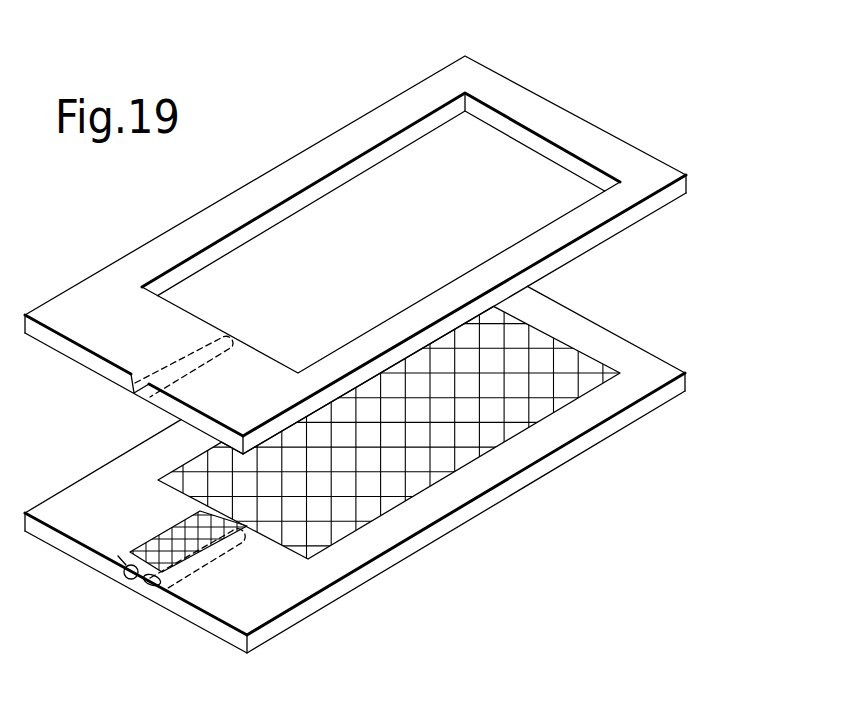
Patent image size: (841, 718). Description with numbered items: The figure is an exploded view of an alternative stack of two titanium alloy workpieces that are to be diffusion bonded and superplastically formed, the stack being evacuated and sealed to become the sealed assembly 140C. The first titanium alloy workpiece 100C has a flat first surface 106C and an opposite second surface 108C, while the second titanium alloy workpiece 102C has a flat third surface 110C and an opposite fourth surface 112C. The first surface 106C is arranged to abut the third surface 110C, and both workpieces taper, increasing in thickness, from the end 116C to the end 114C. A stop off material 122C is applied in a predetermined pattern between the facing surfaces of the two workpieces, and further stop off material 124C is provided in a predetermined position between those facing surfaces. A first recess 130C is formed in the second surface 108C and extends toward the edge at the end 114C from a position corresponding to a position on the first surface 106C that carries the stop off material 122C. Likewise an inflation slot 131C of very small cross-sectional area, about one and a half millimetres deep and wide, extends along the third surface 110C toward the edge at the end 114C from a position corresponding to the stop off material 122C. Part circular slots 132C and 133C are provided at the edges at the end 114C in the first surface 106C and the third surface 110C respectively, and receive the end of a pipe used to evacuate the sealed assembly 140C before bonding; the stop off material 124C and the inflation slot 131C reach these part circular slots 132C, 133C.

The sealed assembly 140C is at (586, 80).
The second titanium alloy workpiece 102C is at (648, 150).
The fourth surface 112C is at (602, 148).
The third surface 110C is at (638, 227).
The part circular slot 133C is at (137, 390).
The inflation slot 131C is at (183, 350).
The first titanium alloy workpiece 100C is at (635, 358).
The first surface 106C is at (593, 417).
The second surface 108C is at (563, 468).
The end 114C is at (248, 637).
The end 116C is at (688, 382).
The stop off material 122C is at (522, 338).
The stop off material 124C is at (148, 545).
The first recess 130C is at (238, 548).
The part circular slot 132C is at (128, 583).